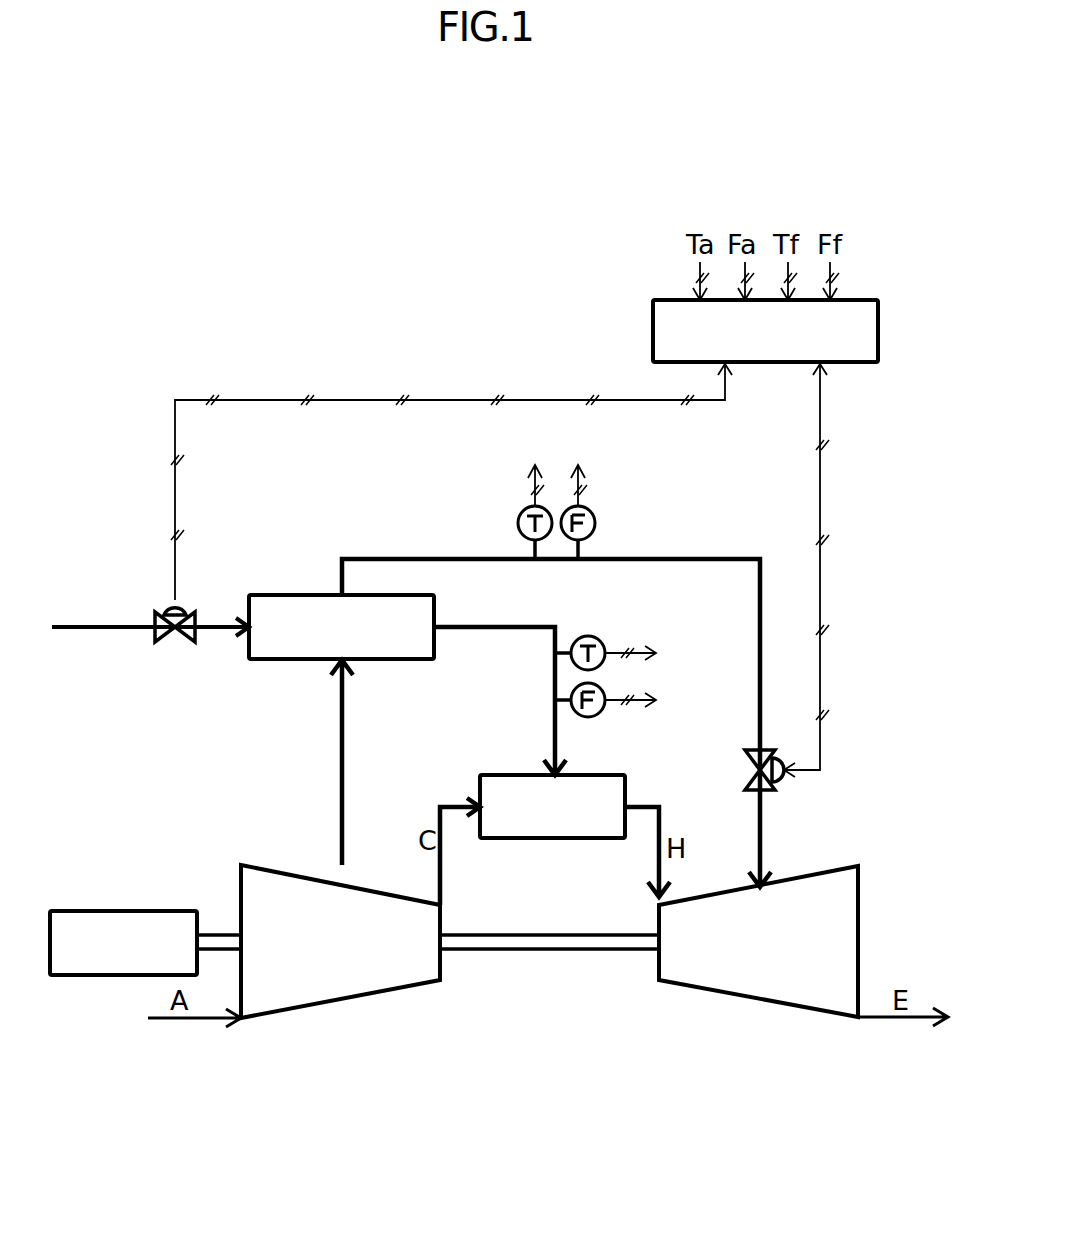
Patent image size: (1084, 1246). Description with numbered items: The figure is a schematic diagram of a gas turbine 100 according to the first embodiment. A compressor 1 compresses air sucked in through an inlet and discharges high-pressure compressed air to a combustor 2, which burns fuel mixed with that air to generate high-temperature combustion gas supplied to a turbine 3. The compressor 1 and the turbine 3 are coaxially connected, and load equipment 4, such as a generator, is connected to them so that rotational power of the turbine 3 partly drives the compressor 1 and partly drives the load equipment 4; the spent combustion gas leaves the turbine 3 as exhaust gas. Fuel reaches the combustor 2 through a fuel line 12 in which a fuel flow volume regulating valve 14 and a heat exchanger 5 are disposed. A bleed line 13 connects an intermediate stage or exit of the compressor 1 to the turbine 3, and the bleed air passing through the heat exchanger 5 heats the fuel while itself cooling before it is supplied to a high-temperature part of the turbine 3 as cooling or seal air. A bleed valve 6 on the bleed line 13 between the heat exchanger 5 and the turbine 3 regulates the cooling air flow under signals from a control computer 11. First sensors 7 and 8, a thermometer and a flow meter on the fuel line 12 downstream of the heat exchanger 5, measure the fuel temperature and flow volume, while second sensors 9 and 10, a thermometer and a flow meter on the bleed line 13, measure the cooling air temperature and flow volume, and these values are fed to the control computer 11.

The compressor 1 is at (340, 1003).
The combustor 2 is at (552, 838).
The turbine 3 is at (760, 1000).
The load equipment 4 is at (122, 911).
The heat exchanger 5 is at (300, 595).
The bleed valve 6 is at (775, 784).
The first sensor 7 is at (588, 636).
The first sensor 8 is at (585, 717).
The second sensor 9 is at (518, 523).
The second sensor 10 is at (595, 523).
The control computer 11 is at (653, 330).
The fuel line 12 is at (78, 624).
The bleed line 13 is at (416, 559).
The fuel flow volume regulating valve 14 is at (190, 614).
The gas turbine 100 is at (231, 818).